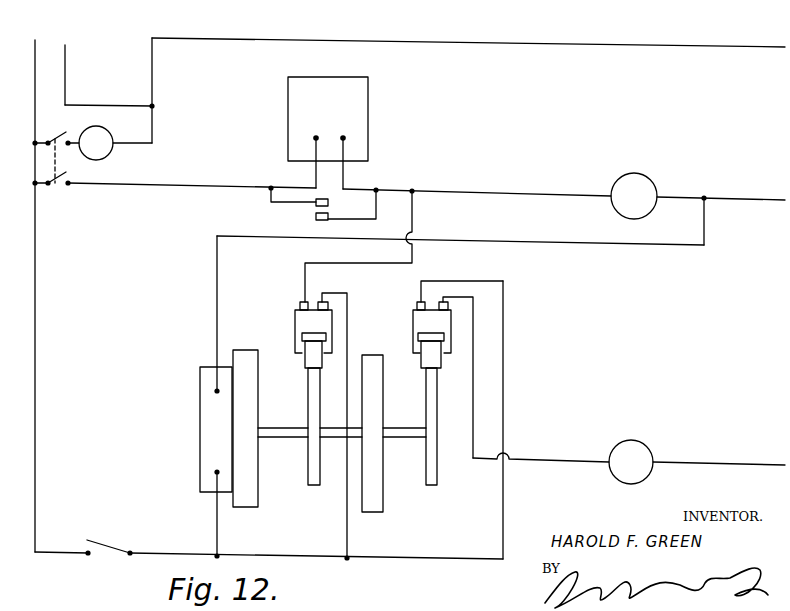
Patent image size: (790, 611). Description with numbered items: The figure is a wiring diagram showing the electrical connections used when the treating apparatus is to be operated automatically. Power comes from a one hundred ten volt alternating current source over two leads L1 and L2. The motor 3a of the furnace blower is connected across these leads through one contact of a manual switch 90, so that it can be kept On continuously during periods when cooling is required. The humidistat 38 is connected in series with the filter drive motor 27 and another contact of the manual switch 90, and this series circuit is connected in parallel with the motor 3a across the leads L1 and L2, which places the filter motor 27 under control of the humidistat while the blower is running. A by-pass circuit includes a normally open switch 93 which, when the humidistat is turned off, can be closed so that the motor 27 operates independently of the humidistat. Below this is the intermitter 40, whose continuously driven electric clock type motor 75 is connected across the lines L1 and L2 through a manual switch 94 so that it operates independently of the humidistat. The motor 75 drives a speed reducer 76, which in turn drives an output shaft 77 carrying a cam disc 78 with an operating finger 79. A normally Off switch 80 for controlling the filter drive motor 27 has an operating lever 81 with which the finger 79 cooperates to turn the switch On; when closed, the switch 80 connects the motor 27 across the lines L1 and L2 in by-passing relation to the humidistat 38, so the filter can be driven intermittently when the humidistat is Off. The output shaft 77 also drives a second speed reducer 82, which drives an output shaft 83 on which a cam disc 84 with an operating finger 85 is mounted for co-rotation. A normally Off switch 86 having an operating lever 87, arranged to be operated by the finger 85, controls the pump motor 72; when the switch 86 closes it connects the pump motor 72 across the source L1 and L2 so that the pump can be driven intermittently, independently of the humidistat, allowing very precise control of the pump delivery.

The lead L1 is at (35, 51).
The lead L2 is at (65, 52).
The manual switch 90 is at (50, 137).
The furnace blower motor 3a is at (112, 153).
The humidistat 38 is at (368, 100).
The normally open switch 93 is at (313, 208).
The filter drive motor 27 is at (648, 178).
The manual switch 94 is at (113, 543).
The intermitter 40 is at (193, 457).
The electric motor 75 is at (200, 421).
The speed reducer 76 is at (248, 508).
The output shaft 77 is at (268, 437).
The cam disc 78 is at (307, 484).
The operating finger 79 is at (308, 375).
The normally Off switch 80 is at (294, 322).
The operating lever 81 is at (304, 361).
The speed reducer 82 is at (372, 513).
The output shaft 83 is at (399, 440).
The cam disc 84 is at (438, 487).
The operating finger 85 is at (439, 377).
The normally Off switch 86 is at (412, 321).
The operating lever 87 is at (444, 360).
The pump motor 72 is at (643, 441).